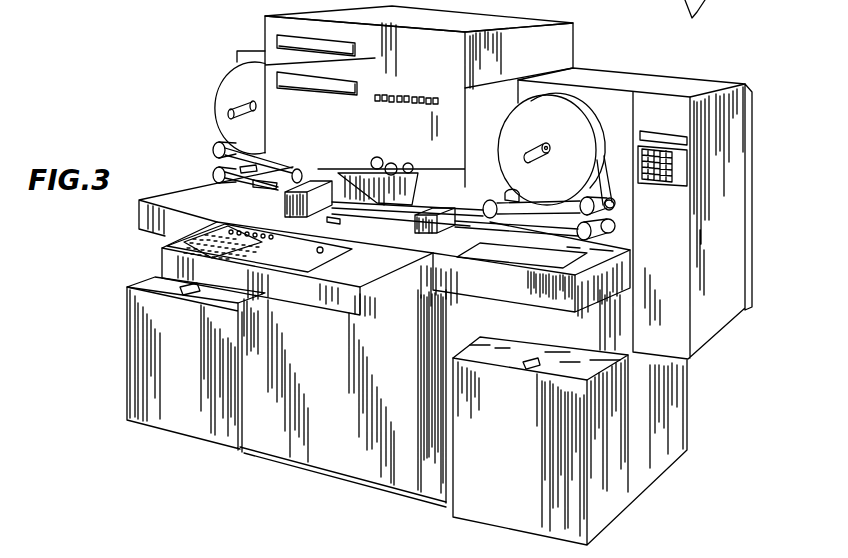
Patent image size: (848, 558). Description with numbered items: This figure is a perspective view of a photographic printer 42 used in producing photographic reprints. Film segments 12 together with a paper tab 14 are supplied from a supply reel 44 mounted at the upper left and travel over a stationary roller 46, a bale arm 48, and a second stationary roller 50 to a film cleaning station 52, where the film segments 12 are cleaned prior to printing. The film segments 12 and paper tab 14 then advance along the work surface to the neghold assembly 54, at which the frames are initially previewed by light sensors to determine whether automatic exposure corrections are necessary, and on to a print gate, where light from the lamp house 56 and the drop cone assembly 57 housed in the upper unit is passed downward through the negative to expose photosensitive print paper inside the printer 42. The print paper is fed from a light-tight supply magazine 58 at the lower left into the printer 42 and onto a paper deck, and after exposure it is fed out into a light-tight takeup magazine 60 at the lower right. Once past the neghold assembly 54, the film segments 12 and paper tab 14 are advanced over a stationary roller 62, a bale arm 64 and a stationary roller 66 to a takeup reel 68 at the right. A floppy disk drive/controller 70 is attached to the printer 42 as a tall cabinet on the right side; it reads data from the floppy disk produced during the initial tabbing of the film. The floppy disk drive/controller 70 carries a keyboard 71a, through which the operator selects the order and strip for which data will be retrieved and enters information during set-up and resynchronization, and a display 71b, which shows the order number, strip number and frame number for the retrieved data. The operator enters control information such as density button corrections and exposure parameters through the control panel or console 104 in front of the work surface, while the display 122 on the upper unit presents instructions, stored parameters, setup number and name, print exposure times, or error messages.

The film segments 12 is at (254, 187).
The paper tab 14 is at (553, 230).
The photographic printer 42 is at (700, 376).
The supply reel 44 is at (218, 82).
The stationary roller 46 is at (213, 149).
The bale arm 48 is at (297, 168).
The stationary roller 50 is at (213, 177).
The film cleaning station 52 is at (320, 176).
The neghold assembly 54 is at (371, 221).
The lamp house 56 is at (375, 147).
The drop cone assembly 57 is at (404, 162).
The light-tight supply magazine 58 is at (160, 350).
The light-tight takeup magazine 60 is at (628, 500).
The stationary roller 62 is at (612, 233).
The bale arm 64 is at (487, 198).
The stationary roller 66 is at (597, 208).
The takeup reel 68 is at (568, 118).
The floppy disk drive/controller 70 is at (720, 156).
The keyboard 71a is at (672, 168).
The display 71b is at (667, 133).
The control panel or console 104 is at (157, 267).
The display 122 is at (355, 47).